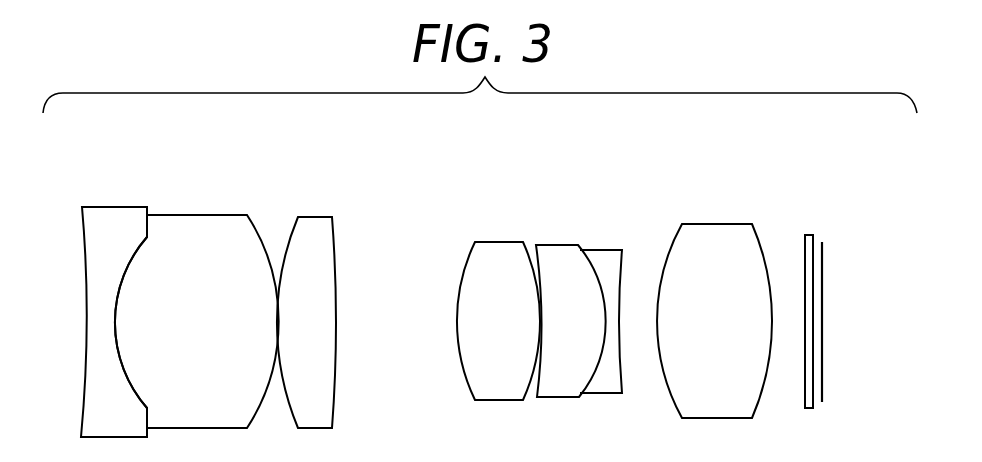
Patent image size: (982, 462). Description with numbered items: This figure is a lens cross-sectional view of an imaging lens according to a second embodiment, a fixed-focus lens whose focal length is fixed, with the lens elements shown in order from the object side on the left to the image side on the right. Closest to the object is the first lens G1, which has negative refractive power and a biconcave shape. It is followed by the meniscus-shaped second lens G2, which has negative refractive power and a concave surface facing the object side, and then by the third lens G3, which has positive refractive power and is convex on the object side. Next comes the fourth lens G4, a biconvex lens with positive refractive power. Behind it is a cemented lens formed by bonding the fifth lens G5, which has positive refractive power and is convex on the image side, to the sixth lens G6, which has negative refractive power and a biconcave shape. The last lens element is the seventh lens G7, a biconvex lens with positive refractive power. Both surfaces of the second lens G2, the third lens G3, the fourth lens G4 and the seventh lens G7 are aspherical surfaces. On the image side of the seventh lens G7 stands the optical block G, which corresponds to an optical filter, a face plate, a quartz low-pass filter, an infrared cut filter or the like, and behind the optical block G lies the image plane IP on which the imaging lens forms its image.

The first lens G1 is at (108, 213).
The second lens G2 is at (203, 227).
The third lens G3 is at (318, 225).
The fourth lens G4 is at (498, 250).
The fifth lens G5 is at (560, 253).
The sixth lens G6 is at (603, 255).
The seventh lens G7 is at (715, 232).
The optical block G is at (810, 235).
The image plane IP is at (822, 245).